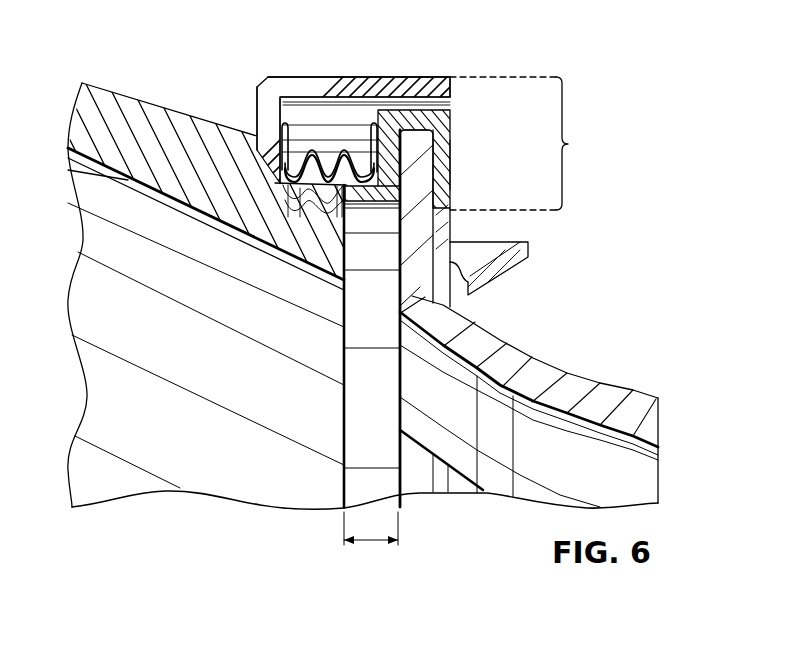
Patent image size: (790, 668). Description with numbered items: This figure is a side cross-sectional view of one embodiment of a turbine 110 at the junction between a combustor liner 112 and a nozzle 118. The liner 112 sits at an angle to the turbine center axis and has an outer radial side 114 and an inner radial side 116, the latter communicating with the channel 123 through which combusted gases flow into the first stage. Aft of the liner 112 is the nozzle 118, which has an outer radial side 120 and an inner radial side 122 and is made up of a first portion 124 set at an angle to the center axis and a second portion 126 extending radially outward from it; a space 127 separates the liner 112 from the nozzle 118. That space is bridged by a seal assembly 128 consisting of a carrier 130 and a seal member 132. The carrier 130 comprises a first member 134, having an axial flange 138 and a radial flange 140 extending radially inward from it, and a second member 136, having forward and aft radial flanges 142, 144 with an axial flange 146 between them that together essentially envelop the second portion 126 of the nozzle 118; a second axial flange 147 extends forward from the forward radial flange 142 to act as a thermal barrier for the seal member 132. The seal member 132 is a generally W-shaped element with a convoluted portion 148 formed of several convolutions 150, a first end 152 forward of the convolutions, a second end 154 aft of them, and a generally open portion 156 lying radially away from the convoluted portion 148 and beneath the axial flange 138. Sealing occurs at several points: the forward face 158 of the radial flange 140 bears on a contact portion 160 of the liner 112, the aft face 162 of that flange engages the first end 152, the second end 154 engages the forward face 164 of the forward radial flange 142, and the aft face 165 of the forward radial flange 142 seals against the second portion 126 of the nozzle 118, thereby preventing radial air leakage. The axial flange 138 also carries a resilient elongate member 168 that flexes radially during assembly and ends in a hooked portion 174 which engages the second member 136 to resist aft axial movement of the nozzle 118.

The turbine 110 is at (525, 66).
The liner 112 is at (105, 86).
The outer radial side 114 is at (156, 105).
The inner radial side 116 is at (128, 180).
The nozzle 118 is at (614, 374).
The outer radial side 120 is at (585, 368).
The inner radial side 122 is at (546, 403).
The channel 123 is at (365, 480).
The first portion 124 is at (543, 370).
The second portion 126 is at (417, 228).
The space 127 is at (373, 543).
The seal assembly 128 is at (407, 72).
The carrier 130 is at (527, 143).
The seal member 132 is at (318, 195).
The first member 134 is at (482, 58).
The second member 136 is at (458, 123).
The axial flange 138 is at (417, 85).
The radial flange 140 is at (257, 117).
The forward radial flange 142 is at (450, 151).
The aft radial flange 144 is at (437, 137).
The axial flange 146 is at (450, 102).
The second axial flange 147 is at (340, 282).
The convoluted portion 148 is at (367, 110).
The convolutions 150 is at (320, 148).
The first end 152 is at (262, 140).
The second end 154 is at (450, 170).
The open portion 156 is at (358, 143).
The forward face 158 is at (257, 105).
The contact portion 160 is at (278, 186).
The aft face 162 is at (284, 115).
The forward face 164 is at (373, 120).
The aft face 165 is at (448, 193).
The elongate member 168 is at (530, 243).
The hooked portion 174 is at (497, 273).